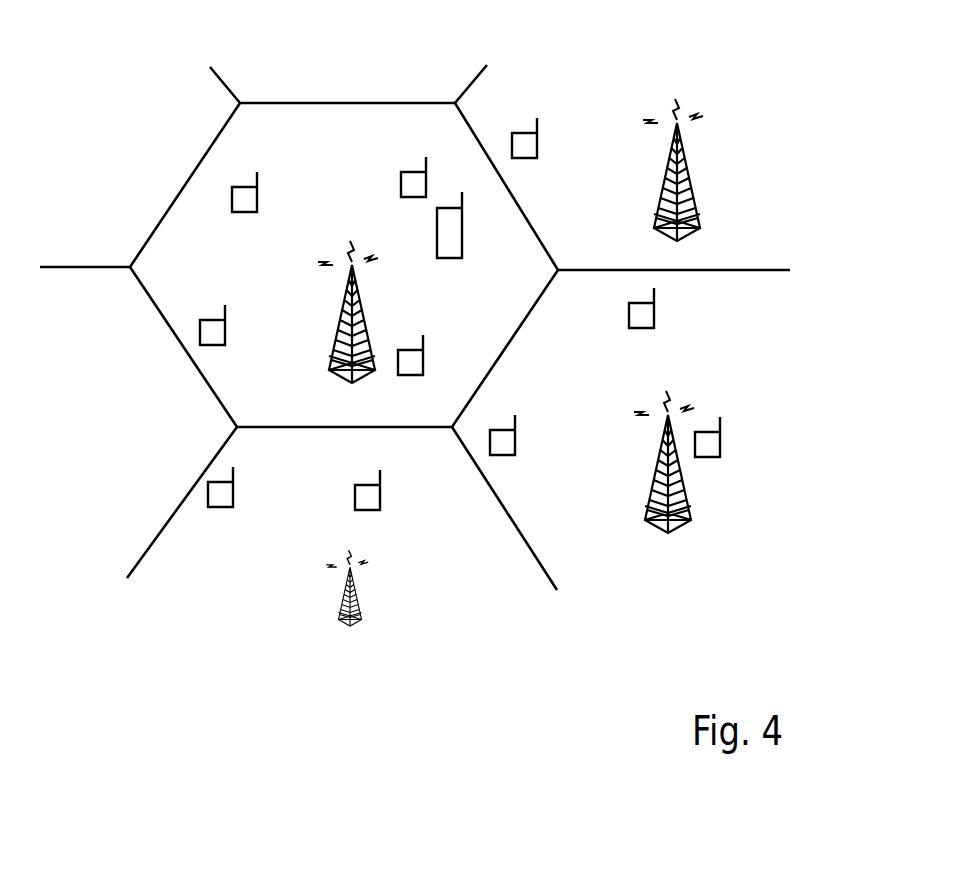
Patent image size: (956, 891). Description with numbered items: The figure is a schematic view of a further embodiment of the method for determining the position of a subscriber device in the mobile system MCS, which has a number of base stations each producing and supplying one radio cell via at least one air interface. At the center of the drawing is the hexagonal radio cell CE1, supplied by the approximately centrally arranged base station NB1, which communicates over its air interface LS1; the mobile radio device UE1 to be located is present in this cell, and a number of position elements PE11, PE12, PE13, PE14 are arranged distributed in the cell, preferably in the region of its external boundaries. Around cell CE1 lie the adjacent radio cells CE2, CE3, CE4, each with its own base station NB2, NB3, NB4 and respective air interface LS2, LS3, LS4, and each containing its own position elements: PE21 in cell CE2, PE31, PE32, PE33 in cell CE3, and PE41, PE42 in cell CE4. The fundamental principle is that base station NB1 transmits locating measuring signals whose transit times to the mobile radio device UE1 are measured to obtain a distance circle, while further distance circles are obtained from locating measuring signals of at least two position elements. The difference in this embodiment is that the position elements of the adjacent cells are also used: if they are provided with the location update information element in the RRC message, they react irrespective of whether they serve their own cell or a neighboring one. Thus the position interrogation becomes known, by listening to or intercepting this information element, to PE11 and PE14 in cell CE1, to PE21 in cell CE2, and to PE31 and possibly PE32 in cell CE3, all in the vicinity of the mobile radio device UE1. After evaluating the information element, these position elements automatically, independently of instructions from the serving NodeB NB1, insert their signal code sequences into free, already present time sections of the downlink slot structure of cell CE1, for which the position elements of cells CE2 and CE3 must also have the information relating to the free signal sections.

The radio cell CE1 is at (322, 118).
The adjacent radio cell CE2 is at (598, 122).
The adjacent radio cell CE3 is at (766, 362).
The adjacent radio cell CE4 is at (222, 598).
The base station NB1 is at (341, 378).
The base station NB2 is at (682, 190).
The base station NB3 is at (673, 532).
The base station NB4 is at (340, 603).
The air interface LS1 is at (345, 260).
The air interface LS2 is at (690, 122).
The air interface LS3 is at (682, 406).
The air interface LS4 is at (332, 565).
The position element PE11 is at (411, 172).
The position element PE12 is at (232, 199).
The position element PE13 is at (200, 328).
The position element PE14 is at (423, 363).
The position element PE21 is at (522, 133).
The position element PE31 is at (629, 312).
The position element PE32 is at (513, 457).
The position element PE33 is at (720, 445).
The position element PE41 is at (380, 498).
The position element PE42 is at (208, 495).
The mobile radio device UE1 is at (462, 237).
The mobile system MCS is at (466, 648).